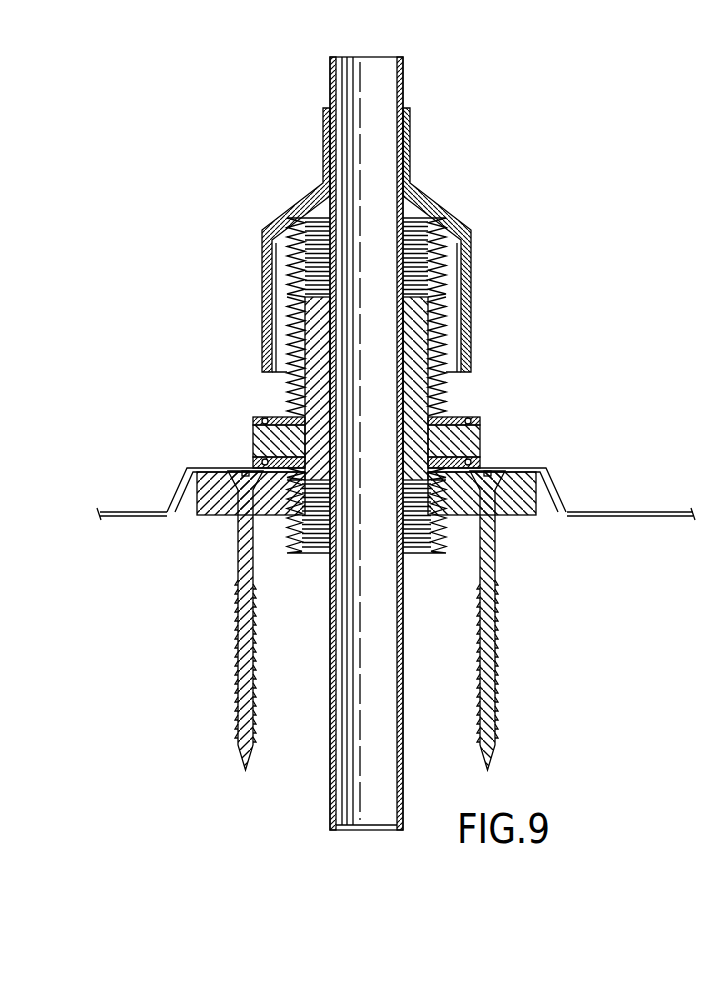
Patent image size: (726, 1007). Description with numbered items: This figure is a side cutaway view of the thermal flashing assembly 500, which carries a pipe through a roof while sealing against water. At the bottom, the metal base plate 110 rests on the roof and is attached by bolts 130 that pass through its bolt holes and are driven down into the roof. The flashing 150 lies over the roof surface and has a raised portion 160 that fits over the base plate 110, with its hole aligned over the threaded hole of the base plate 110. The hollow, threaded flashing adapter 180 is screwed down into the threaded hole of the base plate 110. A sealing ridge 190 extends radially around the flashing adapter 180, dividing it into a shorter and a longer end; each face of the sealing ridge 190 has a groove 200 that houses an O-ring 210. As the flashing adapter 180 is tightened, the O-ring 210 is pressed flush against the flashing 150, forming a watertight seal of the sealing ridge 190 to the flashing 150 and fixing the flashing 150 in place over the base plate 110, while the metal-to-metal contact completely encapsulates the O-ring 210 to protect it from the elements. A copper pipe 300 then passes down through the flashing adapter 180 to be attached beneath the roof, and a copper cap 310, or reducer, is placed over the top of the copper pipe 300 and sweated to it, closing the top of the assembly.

The thermal flashing assembly 500 is at (228, 194).
The copper pipe 300 is at (405, 68).
The copper cap 310 is at (438, 201).
The flashing adapter 180 is at (288, 383).
The groove 200 is at (466, 417).
The sealing ridge 190 is at (482, 431).
The O-ring 210 is at (482, 458).
The raised portion 160 is at (178, 487).
The base plate 110 is at (525, 517).
The flashing 150 is at (612, 512).
The bolts 130 is at (238, 644).